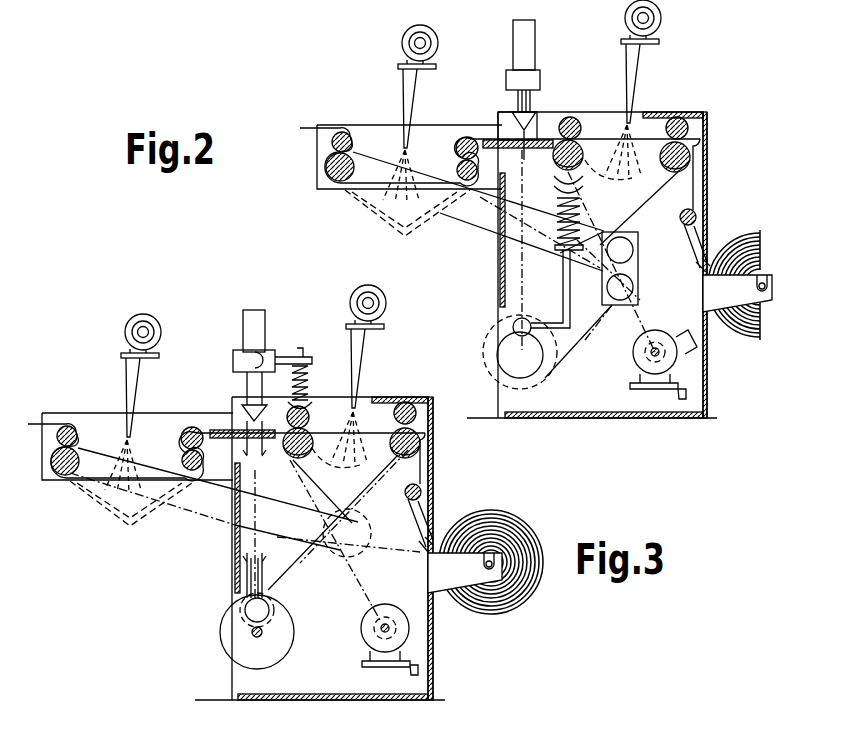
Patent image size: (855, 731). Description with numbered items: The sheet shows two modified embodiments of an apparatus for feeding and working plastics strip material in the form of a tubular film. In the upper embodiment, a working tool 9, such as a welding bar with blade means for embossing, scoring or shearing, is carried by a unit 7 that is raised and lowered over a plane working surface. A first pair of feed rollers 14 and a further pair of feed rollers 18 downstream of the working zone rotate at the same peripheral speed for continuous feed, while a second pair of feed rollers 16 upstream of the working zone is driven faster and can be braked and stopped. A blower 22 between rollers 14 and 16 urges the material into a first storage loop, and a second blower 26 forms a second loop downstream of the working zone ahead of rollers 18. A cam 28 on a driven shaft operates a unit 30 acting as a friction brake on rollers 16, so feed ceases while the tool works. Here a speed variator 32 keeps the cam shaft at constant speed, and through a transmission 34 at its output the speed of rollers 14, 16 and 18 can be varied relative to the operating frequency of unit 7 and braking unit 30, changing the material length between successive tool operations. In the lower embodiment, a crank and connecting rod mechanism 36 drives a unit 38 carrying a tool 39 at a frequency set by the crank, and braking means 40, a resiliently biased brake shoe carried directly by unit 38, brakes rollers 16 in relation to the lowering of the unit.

In FIG. 2, the unit 7 is at (504, 72).
In FIG. 2, the working tool 9 is at (501, 118).
In FIG. 2, the first pair of feed rollers 14 is at (668, 132).
In FIG. 2, the second pair of feed rollers 16 is at (600, 129).
In FIG. 3, the second pair of feed rollers 16 is at (329, 420).
In FIG. 2, the further pair of feed rollers 18 is at (368, 146).
In FIG. 3, the blower 22 is at (378, 348).
In FIG. 3, the second blower 26 is at (122, 368).
In FIG. 2, the cam 28 is at (488, 338).
In FIG. 2, the unit (friction brake) 30 is at (556, 262).
In FIG. 2, the speed variator 32 is at (633, 286).
In FIG. 2, the transmission 34 is at (637, 262).
In FIG. 3, the crank and connecting rod mechanism 36 is at (222, 618).
In FIG. 3, the unit 38 is at (232, 352).
In FIG. 3, the tool 39 is at (240, 410).
In FIG. 3, the braking means 40 is at (310, 376).